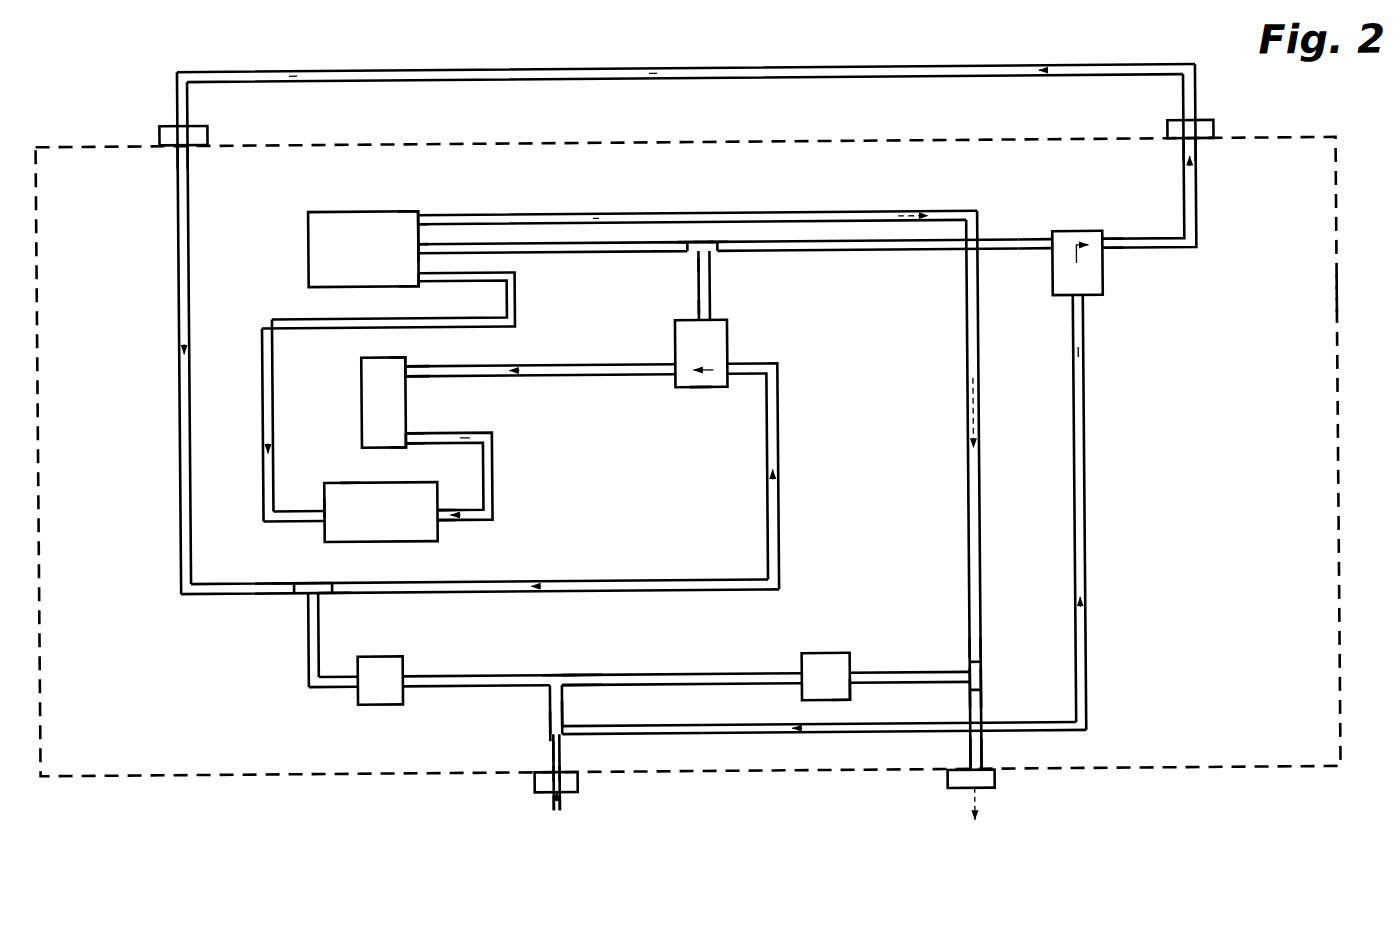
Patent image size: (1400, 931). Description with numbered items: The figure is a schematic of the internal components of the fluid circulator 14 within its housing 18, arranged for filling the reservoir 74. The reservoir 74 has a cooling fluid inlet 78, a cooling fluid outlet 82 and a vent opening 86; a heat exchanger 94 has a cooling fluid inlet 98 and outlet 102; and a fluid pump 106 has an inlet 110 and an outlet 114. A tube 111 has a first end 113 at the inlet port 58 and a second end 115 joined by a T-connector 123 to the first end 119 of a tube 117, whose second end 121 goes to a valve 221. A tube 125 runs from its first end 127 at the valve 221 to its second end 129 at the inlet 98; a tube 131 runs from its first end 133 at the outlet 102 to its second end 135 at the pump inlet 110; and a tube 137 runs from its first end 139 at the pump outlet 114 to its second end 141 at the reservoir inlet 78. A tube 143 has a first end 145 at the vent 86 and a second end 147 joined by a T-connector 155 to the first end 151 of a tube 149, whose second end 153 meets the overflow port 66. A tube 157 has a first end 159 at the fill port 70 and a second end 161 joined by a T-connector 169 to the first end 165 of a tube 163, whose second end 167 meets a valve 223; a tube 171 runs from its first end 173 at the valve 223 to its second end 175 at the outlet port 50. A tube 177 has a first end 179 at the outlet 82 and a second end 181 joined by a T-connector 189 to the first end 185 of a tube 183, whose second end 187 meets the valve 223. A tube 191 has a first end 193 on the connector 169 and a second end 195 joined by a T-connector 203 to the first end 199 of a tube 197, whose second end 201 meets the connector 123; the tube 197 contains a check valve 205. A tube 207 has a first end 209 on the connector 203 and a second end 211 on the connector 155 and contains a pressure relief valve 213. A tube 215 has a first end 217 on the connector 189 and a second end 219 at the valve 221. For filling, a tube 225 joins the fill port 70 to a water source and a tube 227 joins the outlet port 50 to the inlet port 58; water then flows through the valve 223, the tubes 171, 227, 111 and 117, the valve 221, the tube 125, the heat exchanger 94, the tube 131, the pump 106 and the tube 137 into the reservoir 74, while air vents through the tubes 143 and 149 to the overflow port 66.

The fluid circulator 14 is at (1345, 160).
The housing 18 is at (1340, 300).
The outlet connector or port 50 is at (1172, 126).
The inlet connector or port 58 is at (211, 131).
The overflow port 66 is at (947, 787).
The fill port 70 is at (532, 790).
The reservoir 74 is at (310, 240).
The cooling fluid inlet 78 is at (436, 286).
The cooling fluid outlet 82 is at (420, 240).
The vent opening 86 is at (426, 211).
The heat exchanger 94 is at (362, 402).
The cooling fluid inlet 98 is at (410, 364).
The cooling fluid outlet 102 is at (419, 450).
The fluid pump 106 is at (349, 480).
The pump inlet 110 is at (438, 523).
The tube 111 is at (180, 393).
The first end of tube 111 113 is at (176, 162).
The pump outlet 114 is at (324, 505).
The second end of tube 111 115 is at (283, 578).
The tube 117 is at (676, 580).
The first end of tube 117 119 is at (342, 598).
The second end of tube 117 121 is at (766, 382).
The T-connector 123 is at (313, 578).
The tube 125 is at (591, 364).
The first end of tube 125 127 is at (673, 360).
The second end of tube 125 129 is at (421, 366).
The tube 131 is at (494, 467).
The first end of tube 131 133 is at (420, 441).
The second end of tube 131 135 is at (450, 507).
The tube 137 is at (262, 418).
The first end of tube 137 139 is at (301, 521).
The second end of tube 137 141 is at (444, 283).
The tube 143 is at (820, 212).
The first end of tube 143 145 is at (450, 212).
The second end of tube 143 147 is at (988, 651).
The tube 149 is at (983, 748).
The first end of tube 149 151 is at (987, 697).
The second end of tube 149 153 is at (966, 768).
The T-connector 155 is at (987, 673).
The tube 157 is at (560, 760).
The first end of tube 157 159 is at (562, 776).
The second end of tube 157 161 is at (546, 752).
The tube 163 is at (733, 725).
The first end of tube 163 165 is at (577, 724).
The second end of tube 163 167 is at (1072, 301).
The T-connector 169 is at (546, 733).
The tube 171 is at (1200, 220).
The first end of tube 171 173 is at (1110, 236).
The second end of tube 171 175 is at (1182, 146).
The tube 177 is at (601, 255).
The first end of tube 177 179 is at (434, 234).
The second end of tube 177 181 is at (687, 242).
The tube 183 is at (923, 254).
The first end of tube 183 185 is at (723, 242).
The second end of tube 183 187 is at (1035, 239).
The T-connector 189 is at (703, 242).
The tube 191 is at (578, 713).
The first end of tube 191 193 is at (546, 718).
The second end of tube 191 195 is at (546, 698).
The tube 197 is at (306, 678).
The first end of tube 197 199 is at (546, 672).
The second end of tube 197 201 is at (304, 601).
The T-connector 203 is at (563, 672).
The check valve 205 is at (388, 692).
The tube 207 is at (742, 674).
The first end of tube 207 209 is at (590, 672).
The second end of tube 207 211 is at (946, 666).
The check valve or pressure relief valve 213 is at (845, 688).
The tube 215 is at (713, 290).
The first end of tube 215 217 is at (698, 266).
The second end of tube 215 219 is at (698, 308).
The valve 221 is at (700, 389).
The valve 223 is at (1053, 272).
The tube 225 is at (553, 812).
The tube 227 is at (873, 66).